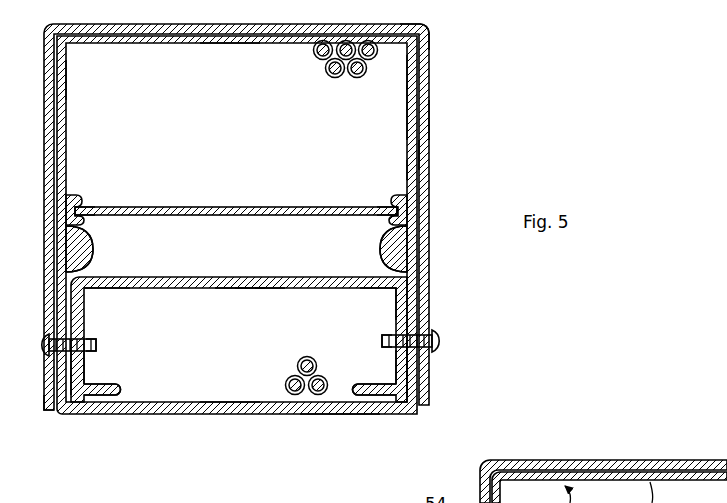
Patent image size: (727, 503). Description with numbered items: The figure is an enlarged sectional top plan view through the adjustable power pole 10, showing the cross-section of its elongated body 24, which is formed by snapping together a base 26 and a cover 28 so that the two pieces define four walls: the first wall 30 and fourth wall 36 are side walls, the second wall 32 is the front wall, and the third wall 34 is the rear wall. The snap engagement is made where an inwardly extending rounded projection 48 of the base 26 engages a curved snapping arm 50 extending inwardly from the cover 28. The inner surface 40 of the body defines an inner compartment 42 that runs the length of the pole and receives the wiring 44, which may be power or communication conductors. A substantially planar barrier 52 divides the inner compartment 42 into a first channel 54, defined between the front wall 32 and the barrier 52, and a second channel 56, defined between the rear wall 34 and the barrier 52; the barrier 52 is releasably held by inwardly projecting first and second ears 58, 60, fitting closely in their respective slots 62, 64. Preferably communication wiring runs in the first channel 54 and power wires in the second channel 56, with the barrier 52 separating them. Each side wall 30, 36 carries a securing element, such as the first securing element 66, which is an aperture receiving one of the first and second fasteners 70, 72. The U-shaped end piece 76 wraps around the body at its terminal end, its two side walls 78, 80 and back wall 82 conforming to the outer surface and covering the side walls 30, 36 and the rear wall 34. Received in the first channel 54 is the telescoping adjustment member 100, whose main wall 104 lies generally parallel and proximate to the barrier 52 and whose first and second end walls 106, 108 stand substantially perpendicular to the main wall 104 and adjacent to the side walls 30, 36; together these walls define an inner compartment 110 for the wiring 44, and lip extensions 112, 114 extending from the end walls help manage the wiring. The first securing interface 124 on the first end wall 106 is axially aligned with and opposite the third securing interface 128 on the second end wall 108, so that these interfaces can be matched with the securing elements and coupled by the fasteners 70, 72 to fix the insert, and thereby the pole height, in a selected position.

The adjustable power pole 10 is at (478, 55).
The elongated body 24 is at (172, 419).
The base 26 is at (340, 405).
The cover 28 is at (78, 132).
The first wall 30 is at (405, 118).
The second wall 32 is at (228, 414).
The third wall 34 is at (230, 45).
The fourth wall 36 is at (66, 80).
The inner surface 40 is at (405, 72).
The inner compartment 42 is at (411, 170).
The wiring 44 is at (336, 73).
The projection 48 is at (92, 278).
The snapping arm 50 is at (95, 250).
The barrier 52 is at (190, 207).
The first channel 54 is at (402, 92).
The second channel 56 is at (405, 302).
The first ear 58 is at (391, 190).
The second ear 60 is at (81, 196).
The slot 62 is at (384, 208).
The slot 64 is at (90, 201).
The first securing element 66 is at (85, 372).
The first fastener 70 is at (442, 345).
The second fastener 72 is at (86, 350).
The end piece 76 is at (430, 120).
The side wall 78 is at (428, 151).
The side wall 80 is at (49, 410).
The back wall 82 is at (414, 20).
The adjustment member 100 is at (233, 303).
The main wall 104 is at (265, 290).
The first end wall 106 is at (396, 318).
The second end wall 108 is at (95, 304).
The inner compartment 110 is at (250, 291).
The lip extension 112 is at (370, 396).
The lip extension 114 is at (105, 396).
The first securing interface 124 is at (385, 341).
The third securing interface 128 is at (95, 341).